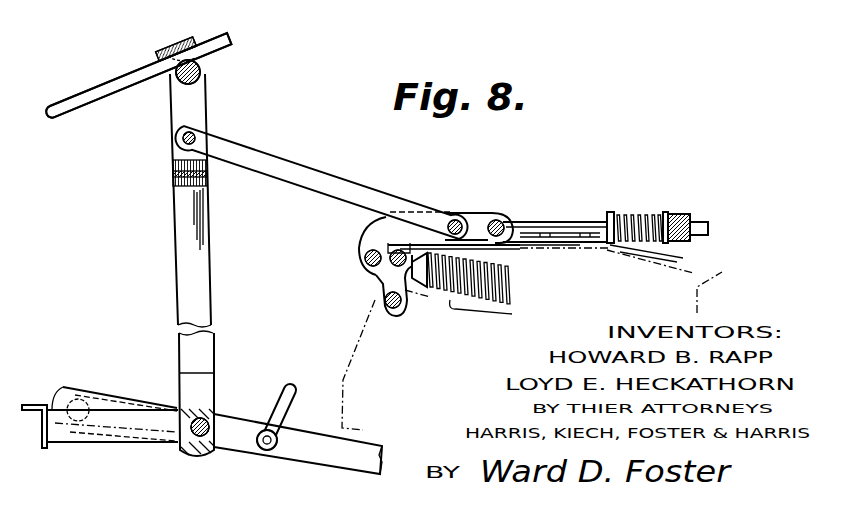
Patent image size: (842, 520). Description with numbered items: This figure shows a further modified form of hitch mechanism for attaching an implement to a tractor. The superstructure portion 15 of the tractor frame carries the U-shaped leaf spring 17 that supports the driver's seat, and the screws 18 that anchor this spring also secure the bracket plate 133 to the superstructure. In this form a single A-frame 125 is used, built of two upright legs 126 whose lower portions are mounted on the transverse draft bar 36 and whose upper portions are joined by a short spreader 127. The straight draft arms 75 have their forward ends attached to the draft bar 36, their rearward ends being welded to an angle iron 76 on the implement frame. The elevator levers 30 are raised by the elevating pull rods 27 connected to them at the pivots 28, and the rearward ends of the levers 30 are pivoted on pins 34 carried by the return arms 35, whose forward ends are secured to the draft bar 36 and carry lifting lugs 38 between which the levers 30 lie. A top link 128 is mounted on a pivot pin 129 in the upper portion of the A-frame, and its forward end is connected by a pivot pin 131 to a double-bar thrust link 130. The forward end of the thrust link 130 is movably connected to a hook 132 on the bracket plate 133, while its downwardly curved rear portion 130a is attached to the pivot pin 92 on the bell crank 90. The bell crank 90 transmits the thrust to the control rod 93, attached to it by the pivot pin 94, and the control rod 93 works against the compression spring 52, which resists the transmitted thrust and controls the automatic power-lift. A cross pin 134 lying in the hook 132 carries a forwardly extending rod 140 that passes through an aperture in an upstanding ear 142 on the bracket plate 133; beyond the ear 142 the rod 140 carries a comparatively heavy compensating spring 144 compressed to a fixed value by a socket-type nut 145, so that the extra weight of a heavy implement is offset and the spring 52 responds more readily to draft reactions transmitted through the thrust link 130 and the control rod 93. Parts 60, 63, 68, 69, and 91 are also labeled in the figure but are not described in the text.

The latch actuating assembly 60 is at (65, 92).
The actuating bar 63 is at (126, 85).
The adjusting nut 68 is at (180, 40).
The pivot pin 69 is at (204, 72).
The upright legs 126 is at (172, 98).
The pivot pin 129 is at (182, 138).
The short spreader 127 is at (175, 190).
The single A-frame 125 is at (172, 262).
The top link 128 is at (312, 168).
The pivot pin 131 is at (457, 216).
The thrust link 130 is at (492, 212).
The hook 132 is at (518, 216).
The rod 140 is at (562, 222).
The bracket plate 133 is at (545, 250).
The upstanding ear 142 is at (612, 212).
The compensating spring 144 is at (655, 215).
The nut 145 is at (705, 238).
The leaf spring 17 is at (650, 260).
The superstructure portion 15 is at (704, 285).
The screws 18 is at (580, 254).
The cross pin 134 is at (487, 247).
The downwardly curved rear portion 130a is at (358, 245).
The pivot pin 94 is at (398, 250).
The pivot pin 92 is at (362, 262).
The bell crank 90 is at (370, 285).
The connecting rod 91 is at (395, 315).
The control rod 93 is at (402, 306).
The compression spring 52 is at (462, 305).
The angle iron 76 is at (38, 404).
The draft arms 75 is at (80, 445).
The return arms 35 is at (125, 395).
The pins 34 is at (77, 400).
The elevator levers 30 is at (98, 400).
The lifting lugs 38 is at (176, 447).
The transverse draft bar 36 is at (217, 418).
The pull rods 27 is at (295, 408).
The pivots 28 is at (267, 452).